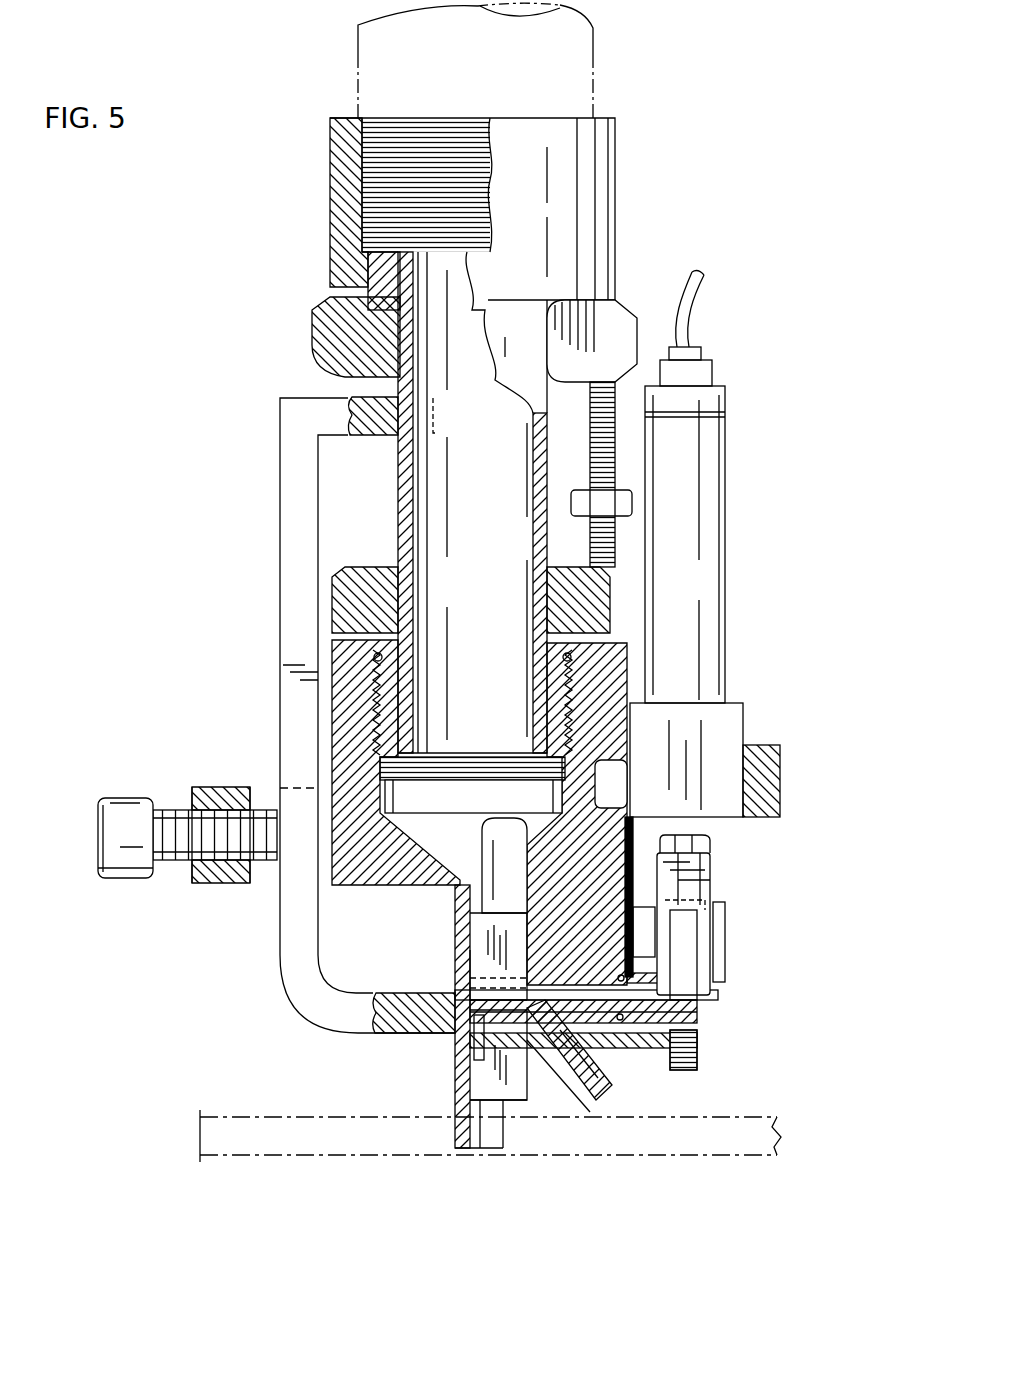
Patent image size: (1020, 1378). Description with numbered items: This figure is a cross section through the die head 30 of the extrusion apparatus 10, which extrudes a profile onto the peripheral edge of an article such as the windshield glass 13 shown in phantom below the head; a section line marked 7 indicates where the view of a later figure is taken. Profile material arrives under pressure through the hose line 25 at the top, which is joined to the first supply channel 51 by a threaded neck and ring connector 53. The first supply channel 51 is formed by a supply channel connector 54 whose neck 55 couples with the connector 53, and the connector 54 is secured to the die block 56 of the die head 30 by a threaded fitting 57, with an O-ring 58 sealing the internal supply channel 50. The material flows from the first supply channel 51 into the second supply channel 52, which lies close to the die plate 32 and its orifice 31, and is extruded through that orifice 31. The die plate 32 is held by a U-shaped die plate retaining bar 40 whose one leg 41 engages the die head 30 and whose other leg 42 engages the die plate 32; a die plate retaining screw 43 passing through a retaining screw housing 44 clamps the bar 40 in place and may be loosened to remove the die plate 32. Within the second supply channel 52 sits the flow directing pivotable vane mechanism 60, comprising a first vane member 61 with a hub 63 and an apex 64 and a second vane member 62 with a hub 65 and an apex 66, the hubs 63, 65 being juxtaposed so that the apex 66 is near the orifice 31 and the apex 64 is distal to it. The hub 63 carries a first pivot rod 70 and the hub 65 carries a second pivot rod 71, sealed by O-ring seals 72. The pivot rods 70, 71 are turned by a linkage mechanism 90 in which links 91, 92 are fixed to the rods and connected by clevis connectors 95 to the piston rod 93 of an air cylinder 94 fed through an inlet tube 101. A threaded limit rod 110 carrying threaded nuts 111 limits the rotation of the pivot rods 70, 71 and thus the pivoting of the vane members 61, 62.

The extrusion apparatus 10 is at (223, 648).
The windshield glass 13 is at (724, 1154).
The hose line 25 is at (583, 48).
The die head 30 is at (572, 1100).
The orifice 31 is at (487, 1105).
The die plate 32 is at (455, 927).
The U-shaped die plate retaining bar 40 is at (283, 552).
The leg 41 is at (365, 405).
The leg 42 is at (403, 1020).
The die plate retaining screw 43 is at (123, 880).
The retaining screw housing 44 is at (220, 877).
The internal supply channel 50 is at (433, 498).
The first supply channel 51 is at (486, 656).
The second supply channel 52 is at (510, 860).
The threaded neck and ring connector 53 is at (608, 197).
The supply channel connector 54 is at (400, 346).
The neck 55 is at (368, 288).
The die block 56 is at (345, 697).
The threaded fitting 57 is at (595, 608).
The O-ring 58 is at (580, 655).
The flow directing pivotable vane mechanism 60 is at (550, 947).
The first vane member 61 is at (478, 953).
The second vane member 62 is at (498, 1095).
The hub 63 is at (470, 985).
The apex 64 is at (490, 898).
The hub 65 is at (457, 1057).
The apex 66 is at (508, 1095).
The first pivot rod 70 is at (712, 993).
The second pivot rod 71 is at (697, 1032).
The O-ring seals 72 is at (605, 1055).
The linkage mechanism 90 is at (748, 940).
The link 91 is at (697, 1010).
The link 92 is at (697, 1060).
The piston rod 93 is at (650, 823).
The air cylinder 94 is at (700, 485).
The clevis connector 95 is at (700, 880).
The inlet tube 101 is at (703, 301).
The threaded limit rod 110 is at (608, 452).
The threaded nut 111 is at (625, 506).
The section line 7- 7 is at (324, 800).